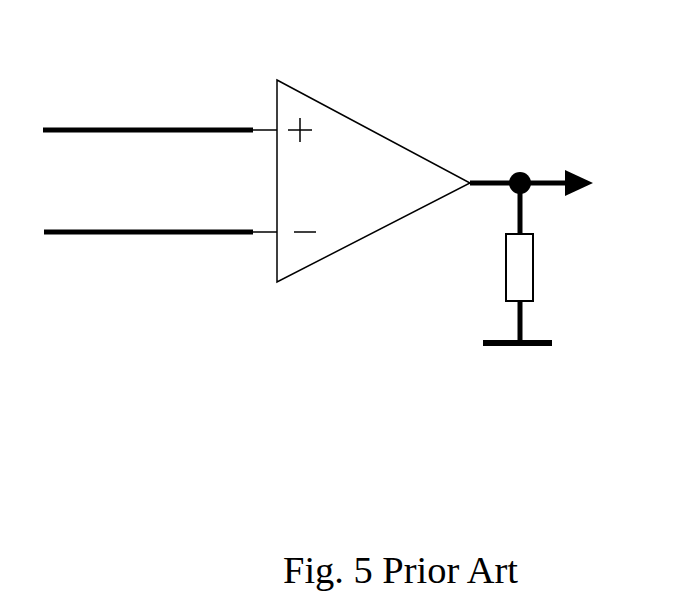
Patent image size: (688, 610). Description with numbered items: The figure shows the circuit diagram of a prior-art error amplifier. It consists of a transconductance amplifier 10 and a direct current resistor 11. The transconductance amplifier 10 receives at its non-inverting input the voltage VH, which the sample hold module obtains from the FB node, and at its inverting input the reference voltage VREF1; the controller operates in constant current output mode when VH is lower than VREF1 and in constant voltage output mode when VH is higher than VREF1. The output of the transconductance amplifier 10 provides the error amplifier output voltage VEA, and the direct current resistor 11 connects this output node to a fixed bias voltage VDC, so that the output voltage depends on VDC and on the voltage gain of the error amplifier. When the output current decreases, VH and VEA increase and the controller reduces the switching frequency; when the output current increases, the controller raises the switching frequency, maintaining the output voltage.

The transconductance amplifier 10 is at (348, 102).
The direct current resistor 11 is at (497, 263).
The voltage VH is at (160, 103).
The reference voltage VREF1 is at (160, 202).
The error amplifier output voltage VEA is at (531, 170).
The fixed bias voltage VDC is at (531, 352).